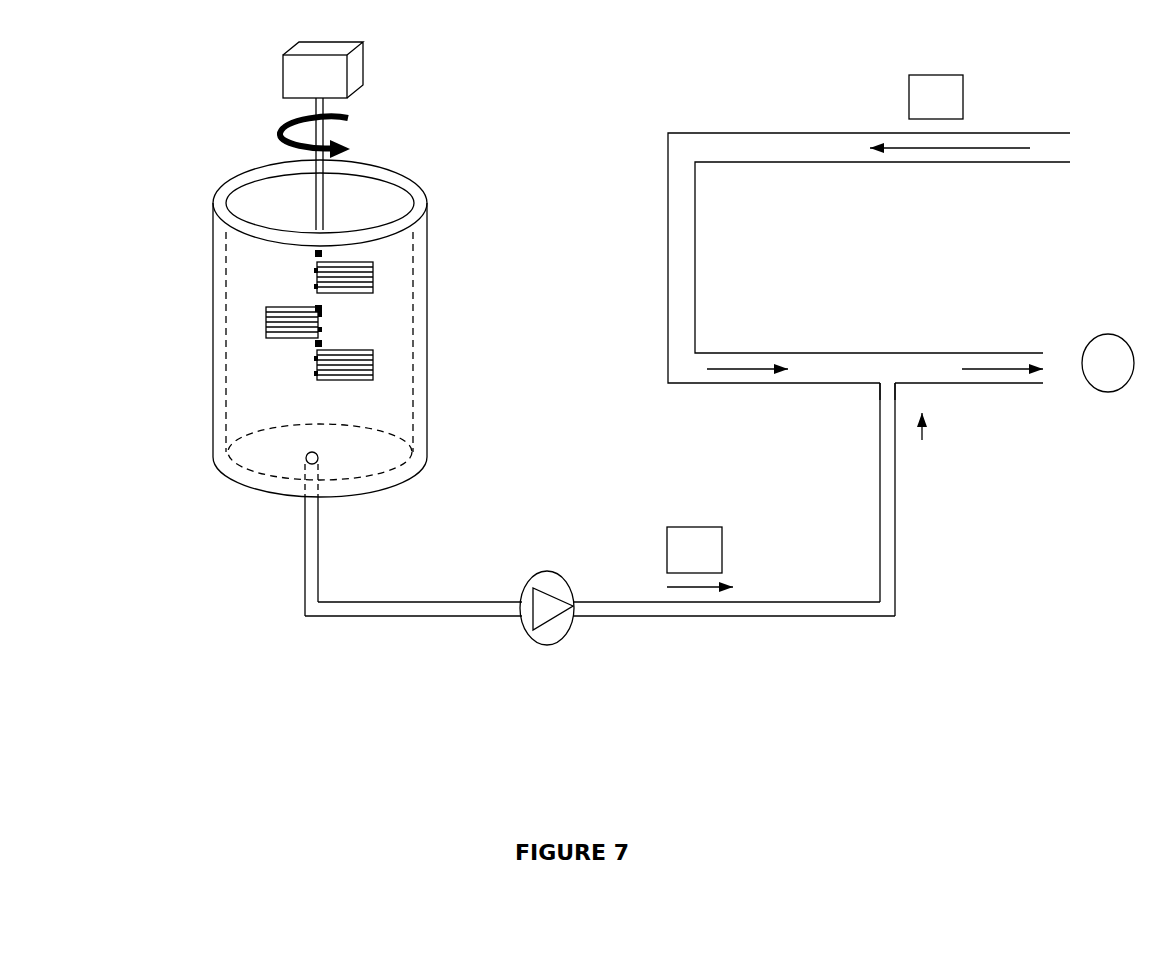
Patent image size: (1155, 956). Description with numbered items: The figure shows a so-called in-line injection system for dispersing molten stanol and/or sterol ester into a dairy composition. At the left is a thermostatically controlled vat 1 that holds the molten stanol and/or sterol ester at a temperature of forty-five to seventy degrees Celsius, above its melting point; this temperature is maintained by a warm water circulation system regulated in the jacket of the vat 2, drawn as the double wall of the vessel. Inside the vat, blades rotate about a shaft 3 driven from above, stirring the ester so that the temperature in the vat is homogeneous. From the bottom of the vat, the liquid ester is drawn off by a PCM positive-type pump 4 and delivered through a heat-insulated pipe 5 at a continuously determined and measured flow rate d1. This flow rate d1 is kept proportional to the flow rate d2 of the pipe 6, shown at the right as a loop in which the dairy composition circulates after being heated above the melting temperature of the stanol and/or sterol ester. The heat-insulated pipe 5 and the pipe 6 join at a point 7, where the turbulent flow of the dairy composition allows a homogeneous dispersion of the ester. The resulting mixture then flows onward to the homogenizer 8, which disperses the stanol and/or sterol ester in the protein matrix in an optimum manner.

The thermostatically controlled vat 1 is at (265, 278).
The jacket of the vat 2 is at (223, 380).
The shaft 3 is at (313, 174).
The PCM positive-type pump 4 is at (547, 647).
The heat-insulated pipe 5 is at (305, 556).
The pipe 6 is at (668, 205).
The point 7 is at (887, 380).
The homogenizer 8 is at (1108, 363).
The flow rate d1 is at (700, 557).
The flow rate d2 is at (936, 97).